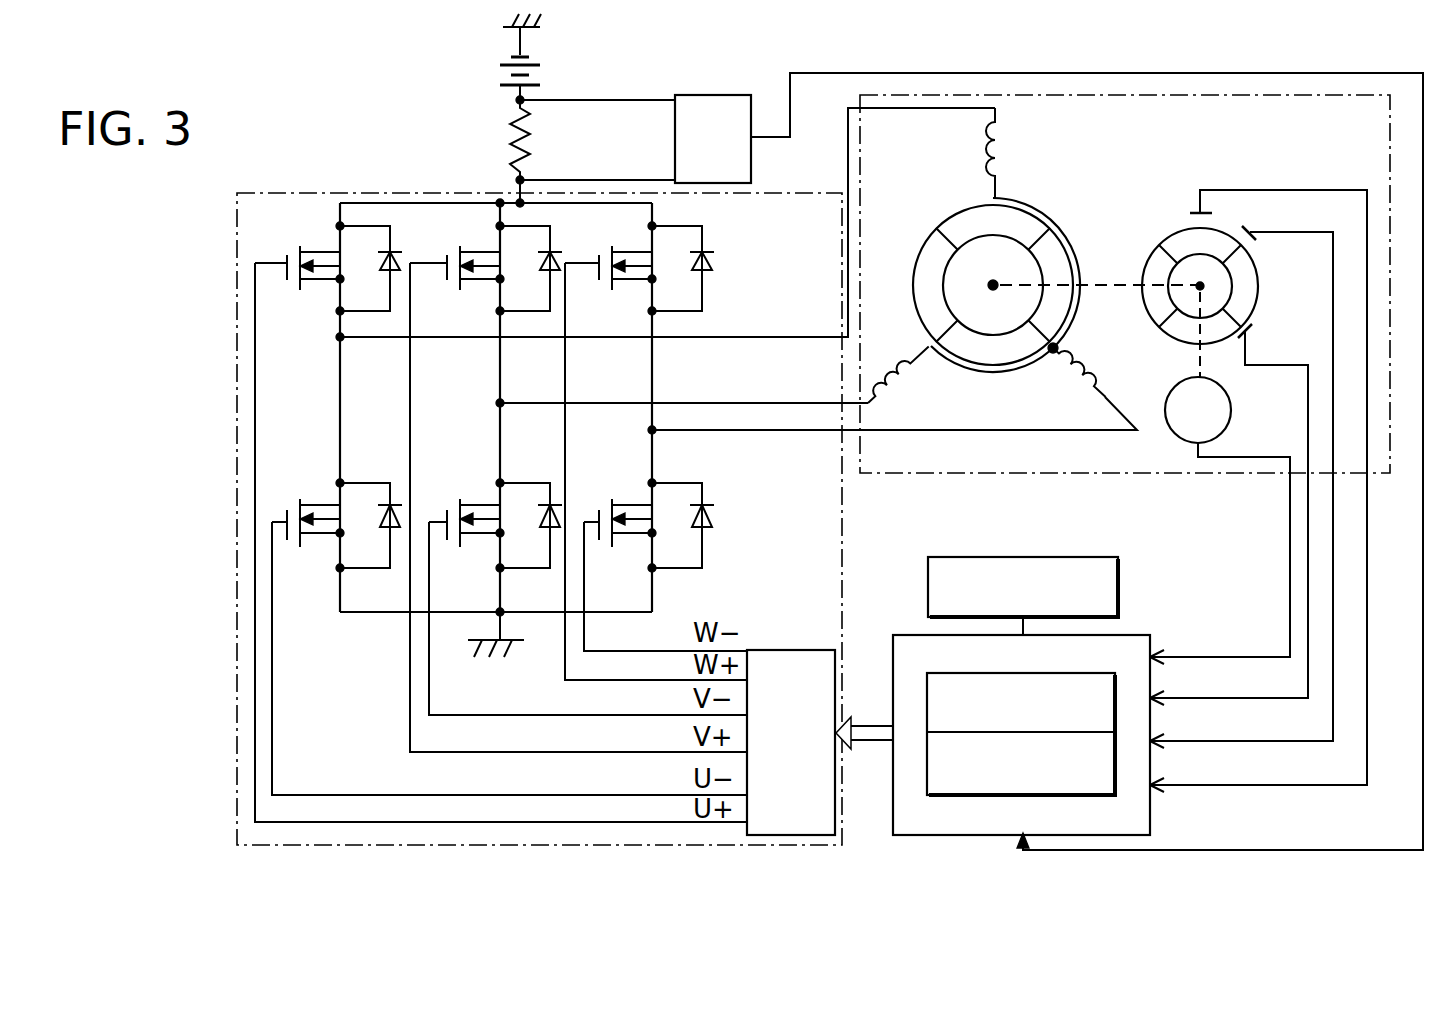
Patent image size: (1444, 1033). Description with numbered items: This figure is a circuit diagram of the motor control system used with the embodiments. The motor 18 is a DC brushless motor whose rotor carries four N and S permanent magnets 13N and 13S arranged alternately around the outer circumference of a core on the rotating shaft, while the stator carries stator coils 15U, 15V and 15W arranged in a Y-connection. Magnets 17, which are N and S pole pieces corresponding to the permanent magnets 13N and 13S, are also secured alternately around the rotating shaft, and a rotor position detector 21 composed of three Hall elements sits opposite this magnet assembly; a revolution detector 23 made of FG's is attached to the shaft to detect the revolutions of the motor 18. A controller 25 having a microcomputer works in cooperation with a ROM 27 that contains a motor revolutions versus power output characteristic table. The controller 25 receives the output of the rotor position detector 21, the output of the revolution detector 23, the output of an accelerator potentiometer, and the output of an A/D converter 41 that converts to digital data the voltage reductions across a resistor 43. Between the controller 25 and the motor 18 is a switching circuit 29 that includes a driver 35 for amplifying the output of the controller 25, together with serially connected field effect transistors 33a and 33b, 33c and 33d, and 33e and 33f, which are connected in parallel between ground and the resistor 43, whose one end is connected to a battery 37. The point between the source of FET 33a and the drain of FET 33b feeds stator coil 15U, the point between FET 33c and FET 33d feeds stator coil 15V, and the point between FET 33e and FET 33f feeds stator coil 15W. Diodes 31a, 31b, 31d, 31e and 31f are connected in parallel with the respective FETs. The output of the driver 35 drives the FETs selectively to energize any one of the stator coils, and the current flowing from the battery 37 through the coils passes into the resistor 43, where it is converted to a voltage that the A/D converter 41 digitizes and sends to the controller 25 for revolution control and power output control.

The N permanent magnet 13N is at (950, 218).
The S permanent magnet 13S is at (920, 255).
The stator coil 15U is at (1008, 152).
The stator coil 15V is at (900, 398).
The stator coil 15W is at (1097, 372).
The magnets 17 is at (1259, 278).
The motor 18 is at (1047, 95).
The rotor position detector 21 is at (1233, 150).
The revolution detector 23 is at (1232, 412).
The controller 25 is at (1150, 637).
The ROM 27 is at (1010, 557).
The switching circuit 29 is at (851, 826).
The diode 31a is at (385, 276).
The diode 31b is at (385, 533).
The diode 31d is at (545, 276).
The diode 31e is at (712, 249).
The diode 31f is at (712, 522).
The field effect transistor 33a is at (312, 236).
The field effect transistor 33b is at (294, 509).
The field effect transistor 33c is at (472, 236).
The field effect transistor 33d is at (454, 509).
The field effect transistor 33e is at (624, 236).
The field effect transistor 33f is at (606, 509).
The driver 35 is at (762, 650).
The battery 37 is at (553, 62).
The A/D converter 41 is at (688, 95).
The resistor 43 is at (527, 140).